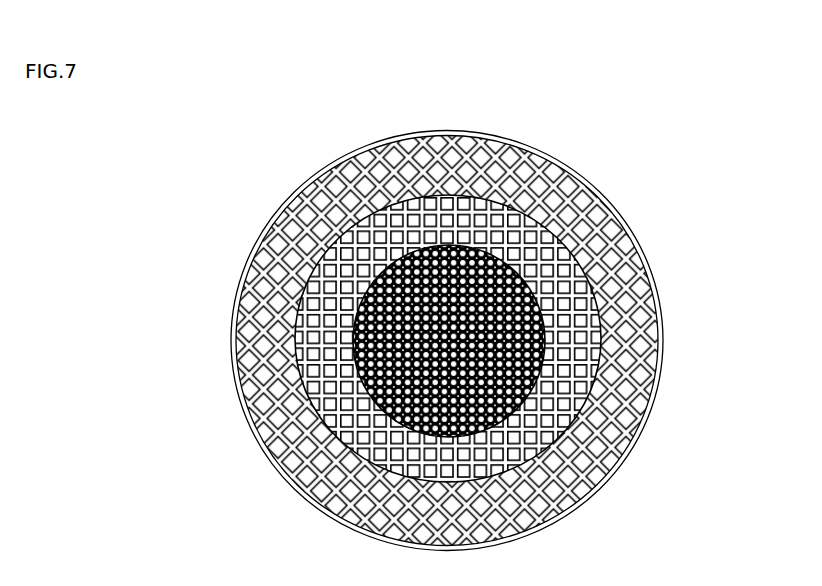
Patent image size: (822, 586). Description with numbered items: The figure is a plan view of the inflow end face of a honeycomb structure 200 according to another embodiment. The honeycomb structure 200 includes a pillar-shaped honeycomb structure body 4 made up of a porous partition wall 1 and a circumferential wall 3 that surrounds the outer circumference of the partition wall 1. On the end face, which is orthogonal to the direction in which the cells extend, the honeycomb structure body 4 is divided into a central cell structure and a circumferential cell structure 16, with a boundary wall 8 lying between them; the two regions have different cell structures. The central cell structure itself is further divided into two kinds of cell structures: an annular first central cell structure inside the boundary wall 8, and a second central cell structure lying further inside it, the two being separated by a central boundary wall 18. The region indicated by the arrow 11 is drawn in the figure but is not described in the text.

The honeycomb structure 200 is at (781, 52).
The partition wall 1 is at (490, 157).
The circumferential wall 3 is at (598, 245).
The honeycomb structure body 4 is at (669, 359).
The boundary wall 8 is at (600, 298).
The outer layer 11 is at (312, 163).
The circumferential cell structure 16 is at (350, 492).
The central boundary wall 18 is at (542, 383).